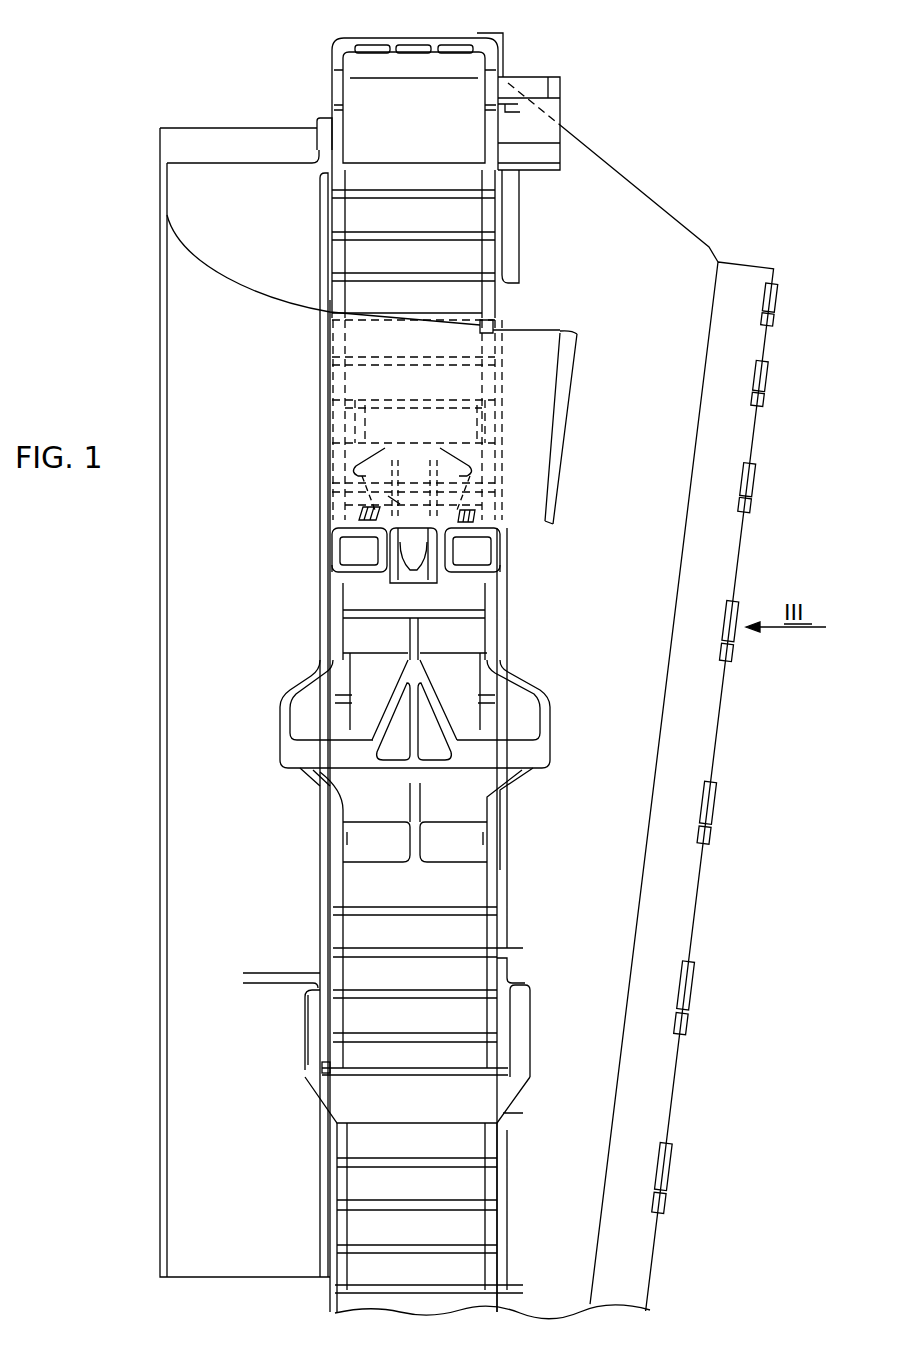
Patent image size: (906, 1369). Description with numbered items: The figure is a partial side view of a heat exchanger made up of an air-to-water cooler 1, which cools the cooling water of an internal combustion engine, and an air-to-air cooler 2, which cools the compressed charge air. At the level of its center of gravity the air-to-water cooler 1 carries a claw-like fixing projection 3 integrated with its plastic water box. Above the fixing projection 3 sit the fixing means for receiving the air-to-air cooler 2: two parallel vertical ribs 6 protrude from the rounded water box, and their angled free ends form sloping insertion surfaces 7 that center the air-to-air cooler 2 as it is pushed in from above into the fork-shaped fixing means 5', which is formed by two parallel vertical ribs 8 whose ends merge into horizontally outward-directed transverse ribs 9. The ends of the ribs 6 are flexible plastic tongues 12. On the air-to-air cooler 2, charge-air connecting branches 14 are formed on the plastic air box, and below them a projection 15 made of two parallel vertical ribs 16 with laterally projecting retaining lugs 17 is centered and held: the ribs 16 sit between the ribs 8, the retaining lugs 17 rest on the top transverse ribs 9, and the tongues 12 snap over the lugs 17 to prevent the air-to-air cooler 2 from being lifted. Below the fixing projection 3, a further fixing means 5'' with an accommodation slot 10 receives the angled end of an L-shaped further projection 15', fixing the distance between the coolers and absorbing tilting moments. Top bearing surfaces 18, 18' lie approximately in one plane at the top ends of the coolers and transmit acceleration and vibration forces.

The air-to-water cooler 1 is at (556, 221).
The air-to-air cooler 2 is at (150, 240).
The fixing projection 3 is at (513, 748).
The fixing means 5' is at (478, 558).
The further fixing means 5'' is at (285, 1032).
The ribs 6 is at (338, 428).
The sloping insertion surfaces 7 is at (357, 466).
The ribs 8 is at (376, 538).
The transverse ribs 9 is at (345, 530).
The accommodation slot 10 is at (325, 1067).
The flexible plastic tongues 12 is at (362, 510).
The charge-air connecting branches 14 is at (530, 342).
The projection 15 is at (331, 485).
The further projection 15' is at (285, 1021).
The vertical ribs 16 is at (416, 576).
The retaining lugs 17 is at (378, 553).
The top bearing surface 18 is at (295, 117).
The top bearing surface 18' is at (415, 104).